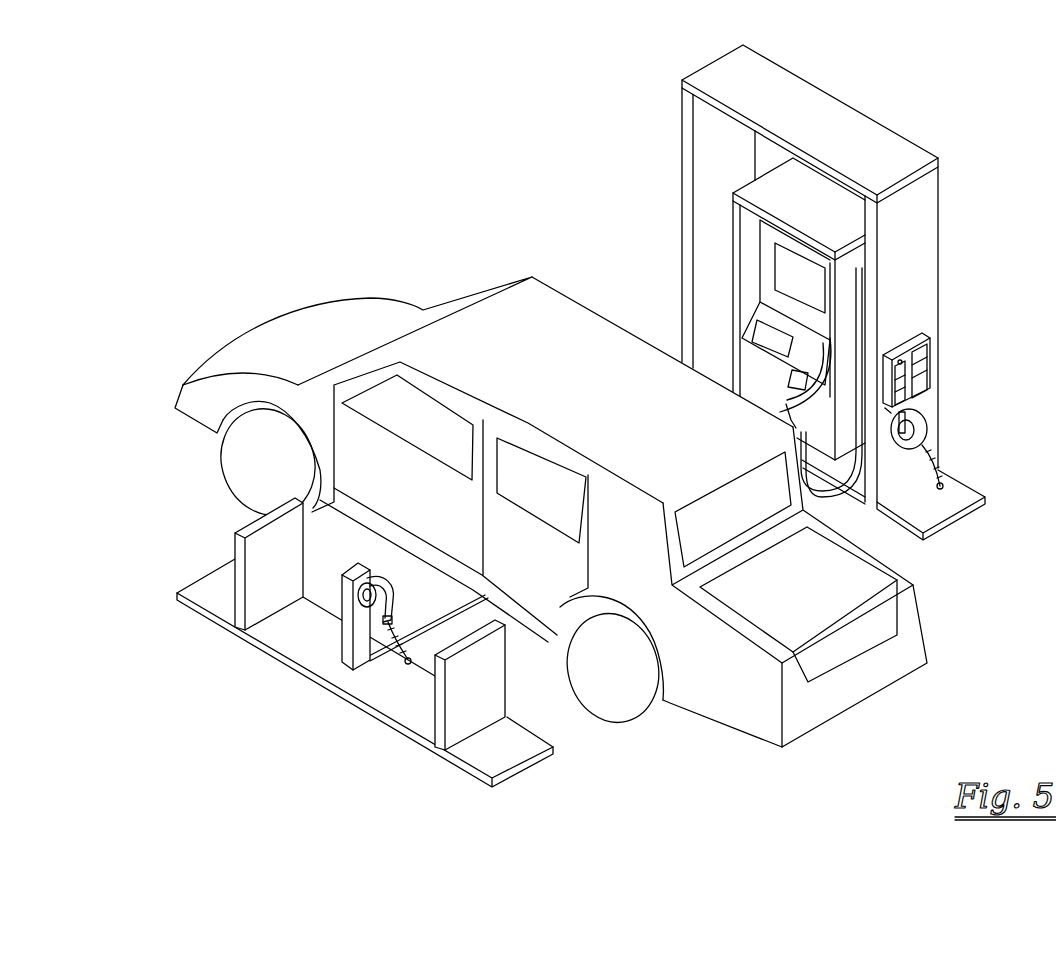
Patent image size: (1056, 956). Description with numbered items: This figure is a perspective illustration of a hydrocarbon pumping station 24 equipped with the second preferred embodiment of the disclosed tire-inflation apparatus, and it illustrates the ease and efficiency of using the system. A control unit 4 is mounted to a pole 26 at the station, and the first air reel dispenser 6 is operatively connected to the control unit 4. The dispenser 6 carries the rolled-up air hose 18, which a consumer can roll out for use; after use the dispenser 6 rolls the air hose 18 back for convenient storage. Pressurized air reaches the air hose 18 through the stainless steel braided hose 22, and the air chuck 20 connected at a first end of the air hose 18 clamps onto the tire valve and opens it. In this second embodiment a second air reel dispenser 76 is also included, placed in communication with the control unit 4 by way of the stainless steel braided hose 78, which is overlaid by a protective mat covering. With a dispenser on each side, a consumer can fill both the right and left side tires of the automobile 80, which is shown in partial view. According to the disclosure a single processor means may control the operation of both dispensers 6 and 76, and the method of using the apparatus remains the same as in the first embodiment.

The control unit 4 is at (922, 335).
The air reel dispenser 6 is at (925, 428).
The air hose 18 is at (931, 447).
The air chuck 20 is at (944, 481).
The stainless steel braided hose 22 is at (894, 436).
The hydrocarbon pumping station 24 is at (900, 116).
The pole 26 is at (925, 246).
The second air reel dispenser 76 is at (363, 603).
The stainless steel braided hose 78 is at (367, 643).
The automobile 80 is at (332, 313).